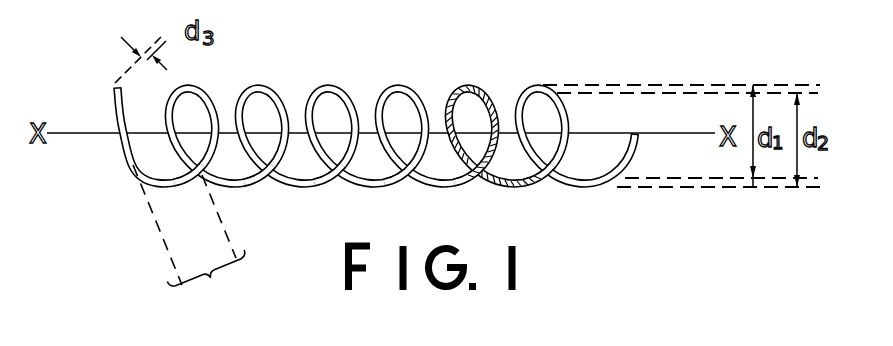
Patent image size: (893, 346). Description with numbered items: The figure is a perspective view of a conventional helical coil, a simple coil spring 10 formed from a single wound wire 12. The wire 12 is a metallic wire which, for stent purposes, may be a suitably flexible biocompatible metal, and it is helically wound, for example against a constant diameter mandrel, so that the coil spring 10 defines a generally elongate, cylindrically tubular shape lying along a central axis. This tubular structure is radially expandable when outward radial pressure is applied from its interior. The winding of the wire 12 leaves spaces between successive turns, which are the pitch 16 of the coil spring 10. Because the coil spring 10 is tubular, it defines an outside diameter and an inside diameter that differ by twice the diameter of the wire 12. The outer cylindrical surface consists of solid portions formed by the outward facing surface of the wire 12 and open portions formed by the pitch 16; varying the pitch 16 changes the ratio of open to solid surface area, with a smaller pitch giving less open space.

The coil spring 10 is at (350, 70).
The wire 12 is at (392, 181).
The pitch 16 is at (189, 245).